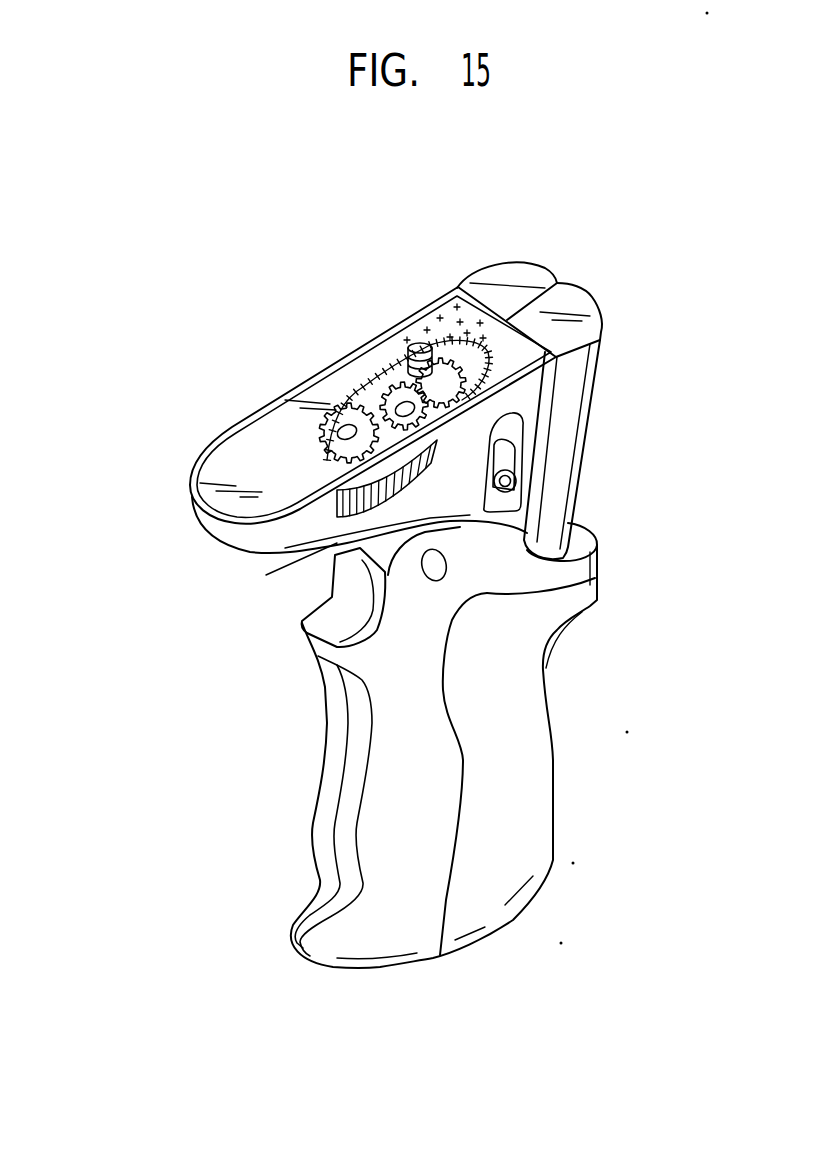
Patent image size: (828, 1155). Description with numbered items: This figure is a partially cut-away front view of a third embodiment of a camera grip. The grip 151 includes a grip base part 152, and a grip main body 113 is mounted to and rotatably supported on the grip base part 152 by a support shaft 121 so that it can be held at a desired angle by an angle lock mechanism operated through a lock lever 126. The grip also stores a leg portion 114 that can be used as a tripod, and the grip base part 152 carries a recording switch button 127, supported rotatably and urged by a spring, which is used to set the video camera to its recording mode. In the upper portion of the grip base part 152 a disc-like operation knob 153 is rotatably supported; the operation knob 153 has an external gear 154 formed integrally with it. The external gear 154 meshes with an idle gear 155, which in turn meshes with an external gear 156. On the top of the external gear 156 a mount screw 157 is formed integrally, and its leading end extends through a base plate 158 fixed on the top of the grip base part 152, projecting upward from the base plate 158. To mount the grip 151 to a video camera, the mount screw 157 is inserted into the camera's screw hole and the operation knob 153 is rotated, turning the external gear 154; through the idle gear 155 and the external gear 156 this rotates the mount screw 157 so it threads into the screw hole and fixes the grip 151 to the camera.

The grip main body 113 is at (510, 873).
The leg portion 114 is at (587, 300).
The support shaft 121 is at (445, 570).
The lock lever 126 is at (516, 486).
The recording switch button 127 is at (300, 623).
The grip 151 is at (188, 478).
The grip base part 152 is at (533, 393).
The operation knob 153 is at (340, 518).
The external gear 154 is at (325, 447).
The idle gear 155 is at (387, 407).
The external gear 156 is at (441, 340).
The mount screw 157 is at (418, 346).
The base plate 158 is at (230, 457).